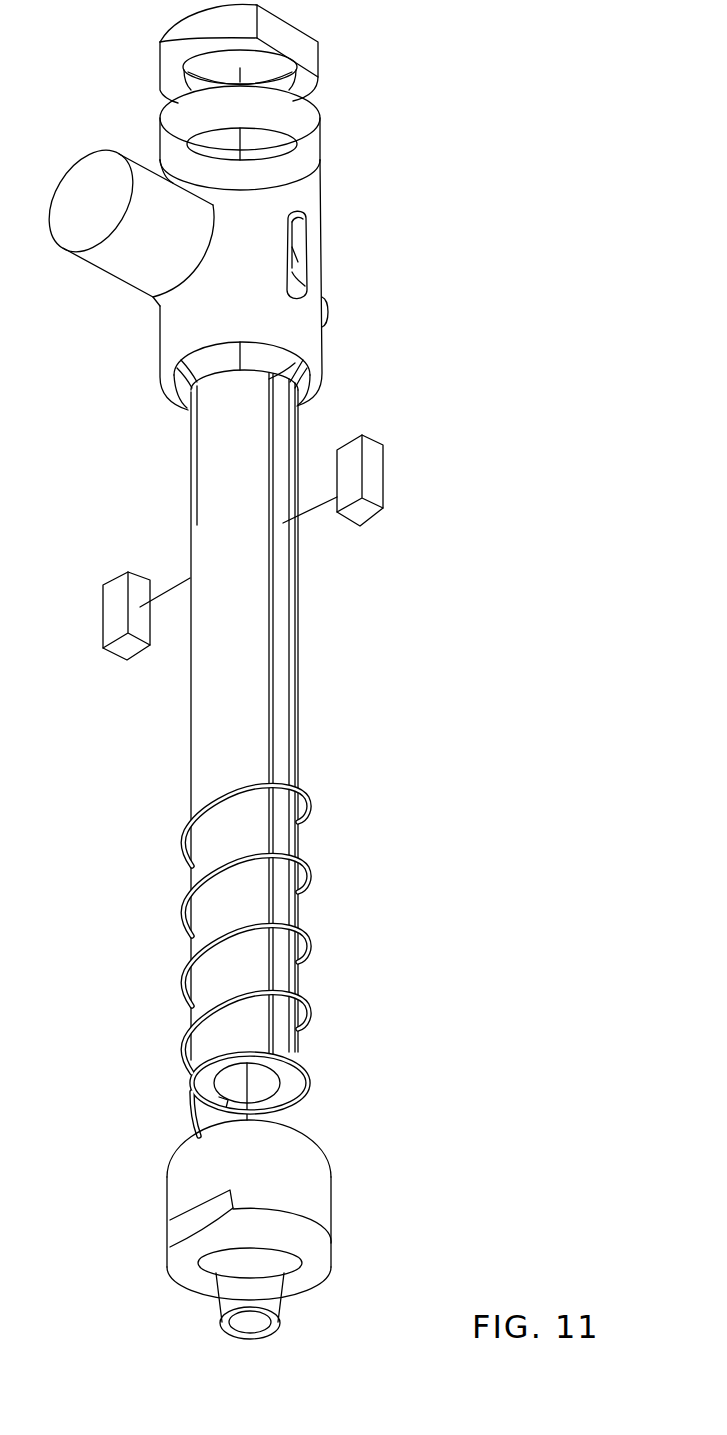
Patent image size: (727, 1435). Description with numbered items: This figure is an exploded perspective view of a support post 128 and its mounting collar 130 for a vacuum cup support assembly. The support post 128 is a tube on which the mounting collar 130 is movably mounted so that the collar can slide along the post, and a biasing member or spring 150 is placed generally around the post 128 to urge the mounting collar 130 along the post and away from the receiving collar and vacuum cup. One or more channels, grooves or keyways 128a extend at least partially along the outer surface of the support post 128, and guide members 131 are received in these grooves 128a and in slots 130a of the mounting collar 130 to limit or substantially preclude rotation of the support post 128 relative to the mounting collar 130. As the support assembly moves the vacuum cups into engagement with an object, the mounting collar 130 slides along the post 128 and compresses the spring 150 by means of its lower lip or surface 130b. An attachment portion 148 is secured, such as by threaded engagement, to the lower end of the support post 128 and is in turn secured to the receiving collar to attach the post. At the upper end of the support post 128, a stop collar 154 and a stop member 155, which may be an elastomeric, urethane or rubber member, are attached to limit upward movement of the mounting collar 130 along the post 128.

The stop collar 154 is at (297, 43).
The stop member 155 is at (310, 128).
The mounting collar 130 is at (322, 212).
The slots of mounting collar 130a is at (295, 277).
The lower lip or surface of mounting collar 130b is at (307, 400).
The support post 128 is at (178, 500).
The channels or grooves or keyways 128a is at (282, 612).
The guide members 131 is at (377, 483).
The biasing member or spring 150 is at (307, 800).
The attachment portion 148 is at (317, 1188).